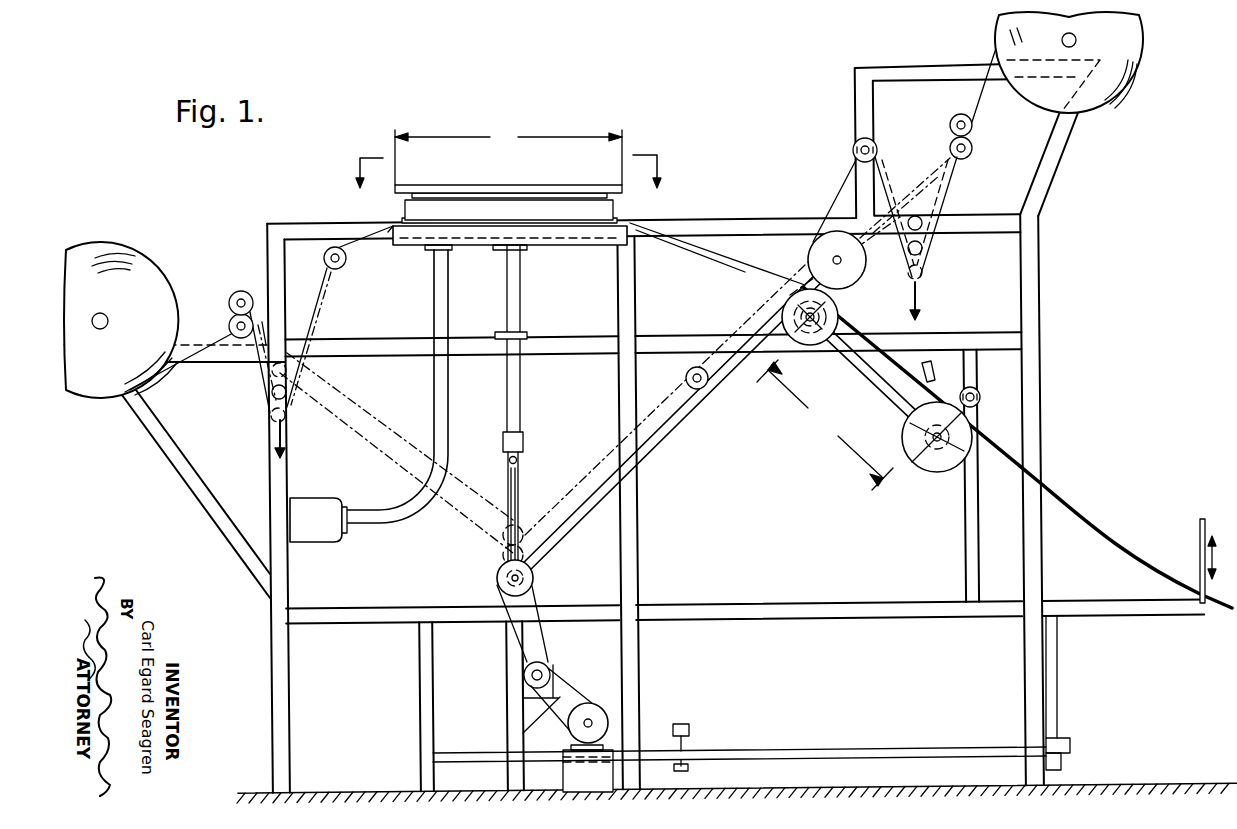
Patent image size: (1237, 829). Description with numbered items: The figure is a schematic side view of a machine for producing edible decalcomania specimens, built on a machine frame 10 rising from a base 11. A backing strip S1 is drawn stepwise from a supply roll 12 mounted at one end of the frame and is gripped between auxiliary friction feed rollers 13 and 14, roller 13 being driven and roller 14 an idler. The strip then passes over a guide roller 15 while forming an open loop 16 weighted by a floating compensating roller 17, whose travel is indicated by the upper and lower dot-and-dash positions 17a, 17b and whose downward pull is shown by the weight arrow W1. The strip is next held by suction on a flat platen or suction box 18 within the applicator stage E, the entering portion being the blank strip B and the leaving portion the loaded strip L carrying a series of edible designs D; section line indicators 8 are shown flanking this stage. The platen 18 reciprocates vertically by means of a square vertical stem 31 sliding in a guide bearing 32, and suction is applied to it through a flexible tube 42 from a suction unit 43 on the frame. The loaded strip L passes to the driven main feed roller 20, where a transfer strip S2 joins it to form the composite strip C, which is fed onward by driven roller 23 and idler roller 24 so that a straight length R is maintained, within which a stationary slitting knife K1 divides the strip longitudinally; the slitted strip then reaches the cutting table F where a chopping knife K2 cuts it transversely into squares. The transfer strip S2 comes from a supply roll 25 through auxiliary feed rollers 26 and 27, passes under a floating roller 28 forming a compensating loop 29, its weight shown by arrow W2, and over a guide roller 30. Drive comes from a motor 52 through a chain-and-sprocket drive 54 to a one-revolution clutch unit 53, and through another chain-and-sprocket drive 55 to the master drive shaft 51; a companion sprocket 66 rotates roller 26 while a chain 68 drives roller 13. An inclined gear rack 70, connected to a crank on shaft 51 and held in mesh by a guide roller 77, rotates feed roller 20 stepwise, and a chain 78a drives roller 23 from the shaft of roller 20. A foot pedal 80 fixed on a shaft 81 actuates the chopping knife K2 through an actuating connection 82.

The machine frame 10 is at (412, 603).
The base 11 is at (1128, 780).
The supply roll 12 is at (158, 265).
The auxiliary friction feed roller 13 is at (236, 334).
The auxiliary friction feed roller 14 is at (233, 294).
The guide roller 15 is at (338, 270).
The open loop 16 is at (262, 320).
The floating or compensating roller 17 is at (270, 405).
The upper dot-and-dash line position of floating roller 17a is at (270, 382).
The lower dot-and-dash line position of floating roller 17b is at (270, 427).
The platen or suction box 18 is at (388, 236).
The main feed friction roller 20 is at (805, 345).
The friction feed roller 23 is at (938, 472).
The friction feed roller 24 is at (977, 394).
The supply roll 25 is at (1138, 88).
The auxiliary feed friction roller 26 is at (973, 148).
The auxiliary feed friction roller 27 is at (950, 116).
The floating or compensating roller 28 is at (922, 252).
The loop 29 is at (926, 180).
The guide roller 30 is at (857, 140).
The vertical stem 31 is at (521, 398).
The guide bearing 32 is at (525, 333).
The flexible conduit or tube 42 is at (449, 305).
The suction fan or suction unit 43 is at (313, 545).
The master drive shaft 51 is at (500, 574).
The motor 52 is at (592, 703).
The clutch unit 53 is at (548, 663).
The chain-and-sprocket drive 54 is at (565, 690).
The chain-and-sprocket drive 55 is at (535, 597).
The companion sprocket 66 is at (596, 460).
The chain 68 is at (372, 402).
The inclined rod or gear rack 70 is at (655, 455).
The guide roller 77 is at (686, 376).
The chain 78a is at (853, 380).
The foot pedal 80 is at (688, 720).
The shaft 81 is at (775, 750).
The actuating connection 82 is at (1060, 684).
The blank strip B is at (360, 246).
The composite strip C is at (870, 328).
The edible designs D is at (672, 233).
The applicator stage E is at (508, 175).
The platform or cutting table F is at (1107, 598).
The slitting knife K1 is at (935, 370).
The chopping knife K2 is at (1198, 553).
The loaded strip L is at (714, 258).
The straight length of composite strip R is at (825, 425).
The backing strip S1 is at (303, 322).
The transfer strip S2 is at (988, 50).
The weight arrow W1 is at (287, 438).
The weight arrow W2 is at (922, 296).
The section line 8 is at (508, 176).